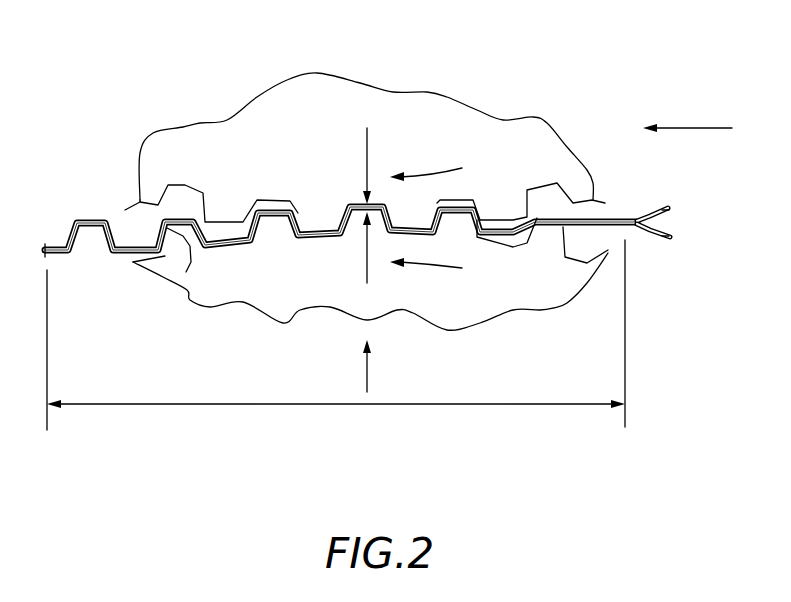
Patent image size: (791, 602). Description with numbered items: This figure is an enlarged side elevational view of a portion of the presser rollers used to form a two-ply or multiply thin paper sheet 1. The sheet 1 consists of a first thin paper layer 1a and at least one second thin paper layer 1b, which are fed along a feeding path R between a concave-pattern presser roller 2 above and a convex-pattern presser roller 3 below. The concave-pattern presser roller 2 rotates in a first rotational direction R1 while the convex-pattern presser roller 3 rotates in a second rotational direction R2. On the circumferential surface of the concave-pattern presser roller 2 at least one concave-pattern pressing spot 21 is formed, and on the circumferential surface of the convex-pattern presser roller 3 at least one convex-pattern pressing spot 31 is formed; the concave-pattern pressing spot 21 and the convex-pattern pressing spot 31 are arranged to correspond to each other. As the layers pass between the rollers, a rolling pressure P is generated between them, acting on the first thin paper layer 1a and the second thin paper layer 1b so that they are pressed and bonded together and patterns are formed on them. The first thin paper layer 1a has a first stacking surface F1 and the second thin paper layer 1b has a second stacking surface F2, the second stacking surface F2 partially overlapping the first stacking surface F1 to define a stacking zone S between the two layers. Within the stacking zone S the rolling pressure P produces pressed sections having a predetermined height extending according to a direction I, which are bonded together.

The multiply thin paper sheet 1 is at (125, 276).
The first thin paper layer 1a is at (663, 208).
The second thin paper layer 1b is at (656, 238).
The concave-pattern presser roller 2 is at (298, 97).
The concave-pattern pressing spot 21 is at (125, 210).
The convex-pattern presser roller 3 is at (297, 303).
The convex-pattern pressing spot 31 is at (186, 272).
The feeding path R is at (677, 128).
The first rotational direction R1 is at (440, 170).
The second rotational direction R2 is at (437, 270).
The rolling pressure P is at (364, 146).
The direction I is at (368, 370).
The stacking zone S is at (317, 405).
The first stacking surface F1 is at (669, 210).
The second stacking surface F2 is at (669, 236).